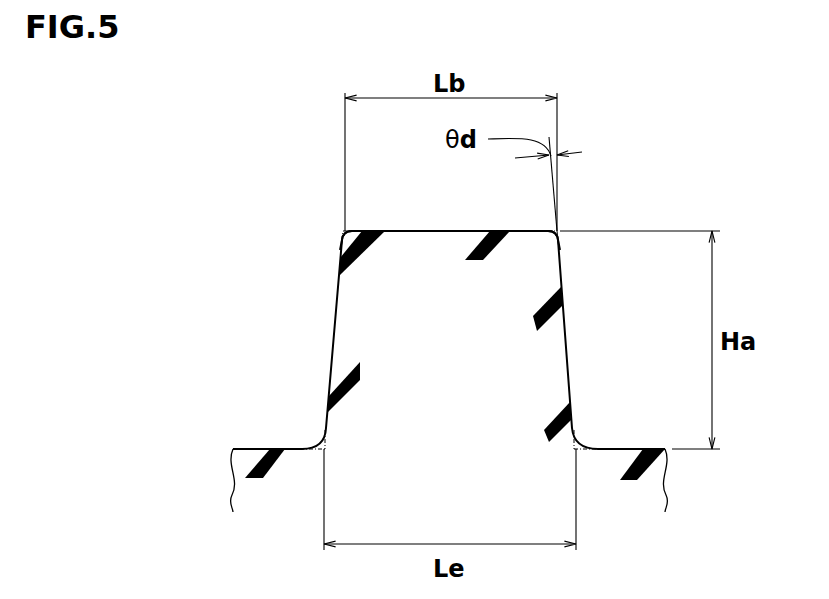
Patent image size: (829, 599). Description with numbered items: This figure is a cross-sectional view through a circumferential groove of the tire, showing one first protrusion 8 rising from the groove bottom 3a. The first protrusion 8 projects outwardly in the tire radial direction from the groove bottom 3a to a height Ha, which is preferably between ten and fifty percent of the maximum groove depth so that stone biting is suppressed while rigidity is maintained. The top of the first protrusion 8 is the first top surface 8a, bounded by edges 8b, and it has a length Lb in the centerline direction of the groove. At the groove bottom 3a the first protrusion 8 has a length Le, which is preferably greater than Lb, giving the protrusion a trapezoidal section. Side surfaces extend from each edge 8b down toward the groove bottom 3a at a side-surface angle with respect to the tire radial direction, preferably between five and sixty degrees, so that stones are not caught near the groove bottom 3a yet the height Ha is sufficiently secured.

The first protrusion 8 is at (425, 320).
The first top surface 8a is at (420, 229).
The edge 8b is at (338, 229).
The groove bottom 3a is at (257, 447).